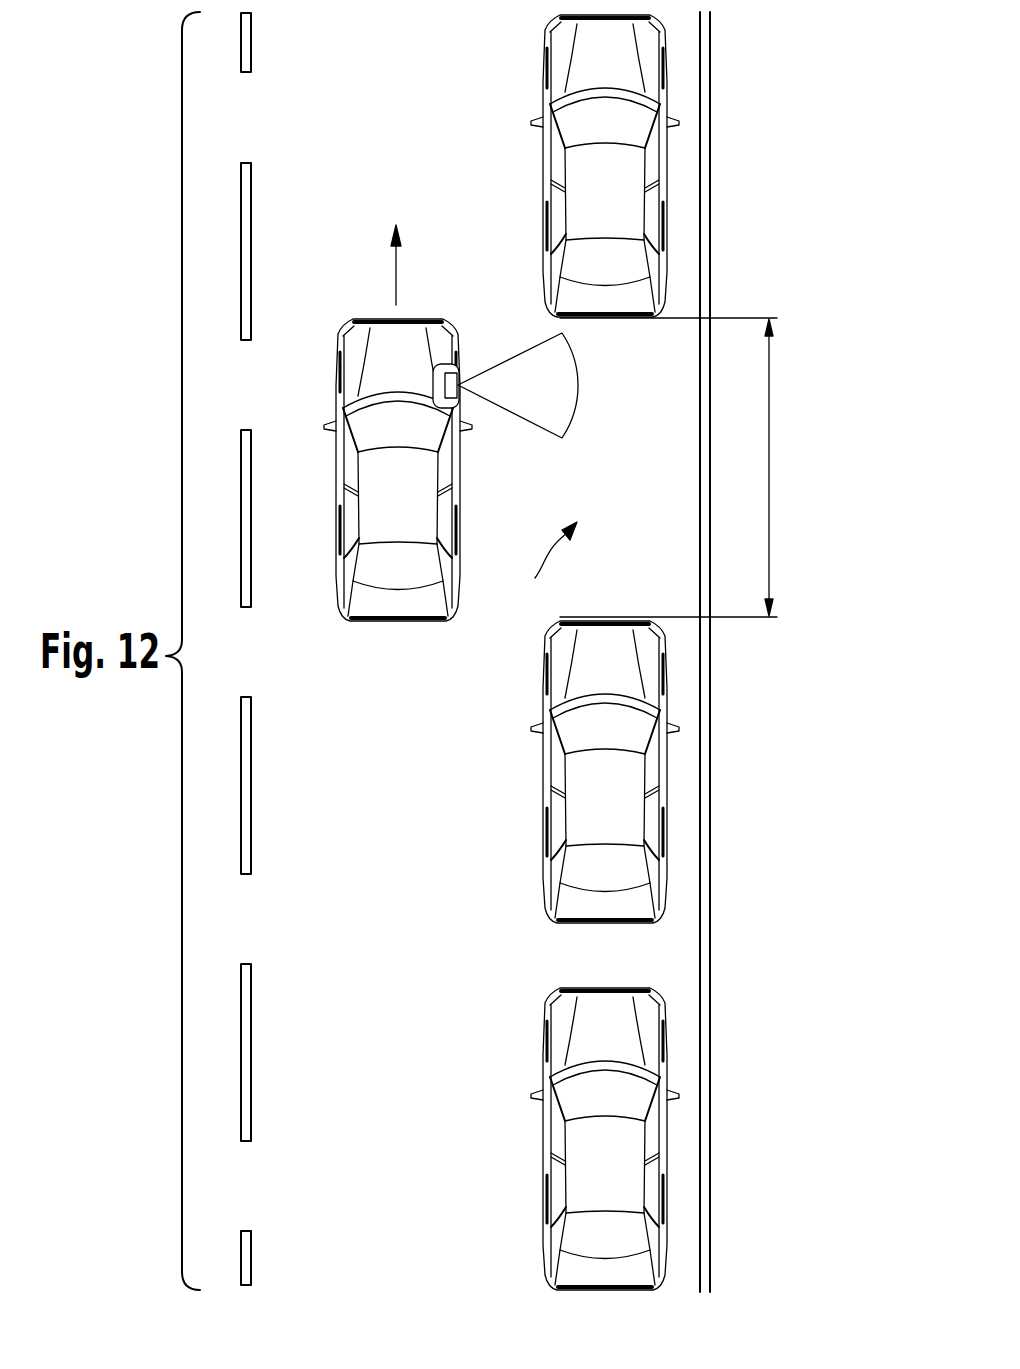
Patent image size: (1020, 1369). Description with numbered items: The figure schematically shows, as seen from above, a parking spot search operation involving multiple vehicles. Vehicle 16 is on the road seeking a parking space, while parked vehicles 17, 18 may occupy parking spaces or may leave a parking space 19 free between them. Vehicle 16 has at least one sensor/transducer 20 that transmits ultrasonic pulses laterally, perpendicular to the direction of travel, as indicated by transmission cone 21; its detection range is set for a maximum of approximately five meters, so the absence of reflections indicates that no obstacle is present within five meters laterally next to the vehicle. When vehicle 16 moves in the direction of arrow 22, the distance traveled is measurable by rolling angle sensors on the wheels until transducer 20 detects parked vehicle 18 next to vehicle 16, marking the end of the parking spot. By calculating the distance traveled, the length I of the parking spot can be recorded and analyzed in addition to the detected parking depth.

The vehicle 16 is at (392, 604).
The parked vehicle 17 is at (618, 810).
The parked vehicle 18 is at (618, 205).
The parking space 19 is at (542, 567).
The sensor/transducer 20 is at (458, 384).
The transmission cone 21 is at (518, 428).
The arrow 22 is at (396, 275).
The length of the parking spot I is at (770, 463).